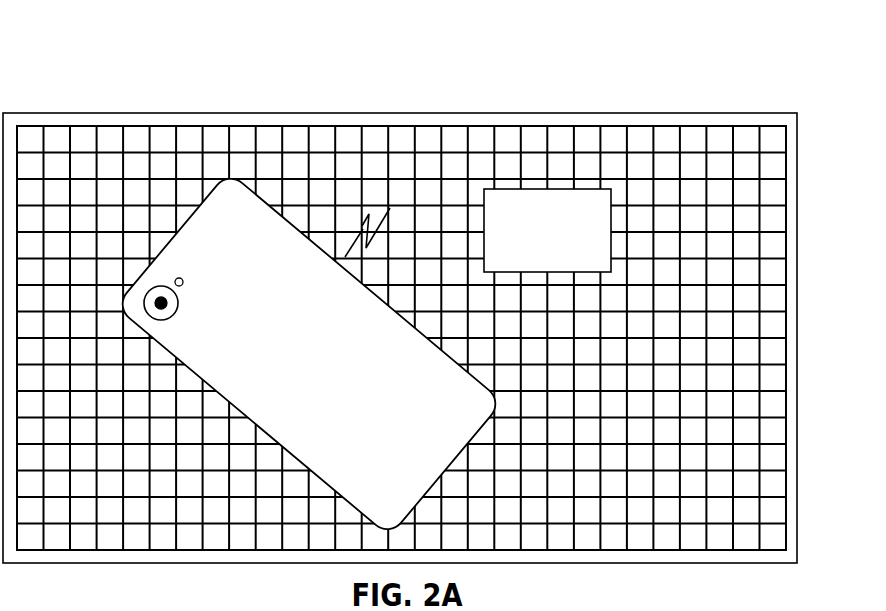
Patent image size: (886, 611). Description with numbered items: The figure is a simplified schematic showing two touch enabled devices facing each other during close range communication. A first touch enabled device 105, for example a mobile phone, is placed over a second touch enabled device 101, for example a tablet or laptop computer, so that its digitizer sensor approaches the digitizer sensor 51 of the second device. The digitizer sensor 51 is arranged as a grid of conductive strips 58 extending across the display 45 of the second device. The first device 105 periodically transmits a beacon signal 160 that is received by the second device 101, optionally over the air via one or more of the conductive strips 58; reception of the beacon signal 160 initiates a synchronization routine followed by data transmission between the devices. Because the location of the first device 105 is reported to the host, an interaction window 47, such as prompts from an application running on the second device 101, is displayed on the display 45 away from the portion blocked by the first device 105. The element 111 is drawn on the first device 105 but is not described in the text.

The second touch enabled device 101 is at (433, 289).
The display 45 is at (590, 113).
The interaction window 47 is at (528, 189).
The digitizer sensor 51 is at (430, 125).
The conductive strips 58 is at (335, 132).
The first touch enabled device 105 is at (262, 283).
The mobile device housing 111 is at (229, 211).
The beacon signal 160 is at (363, 229).